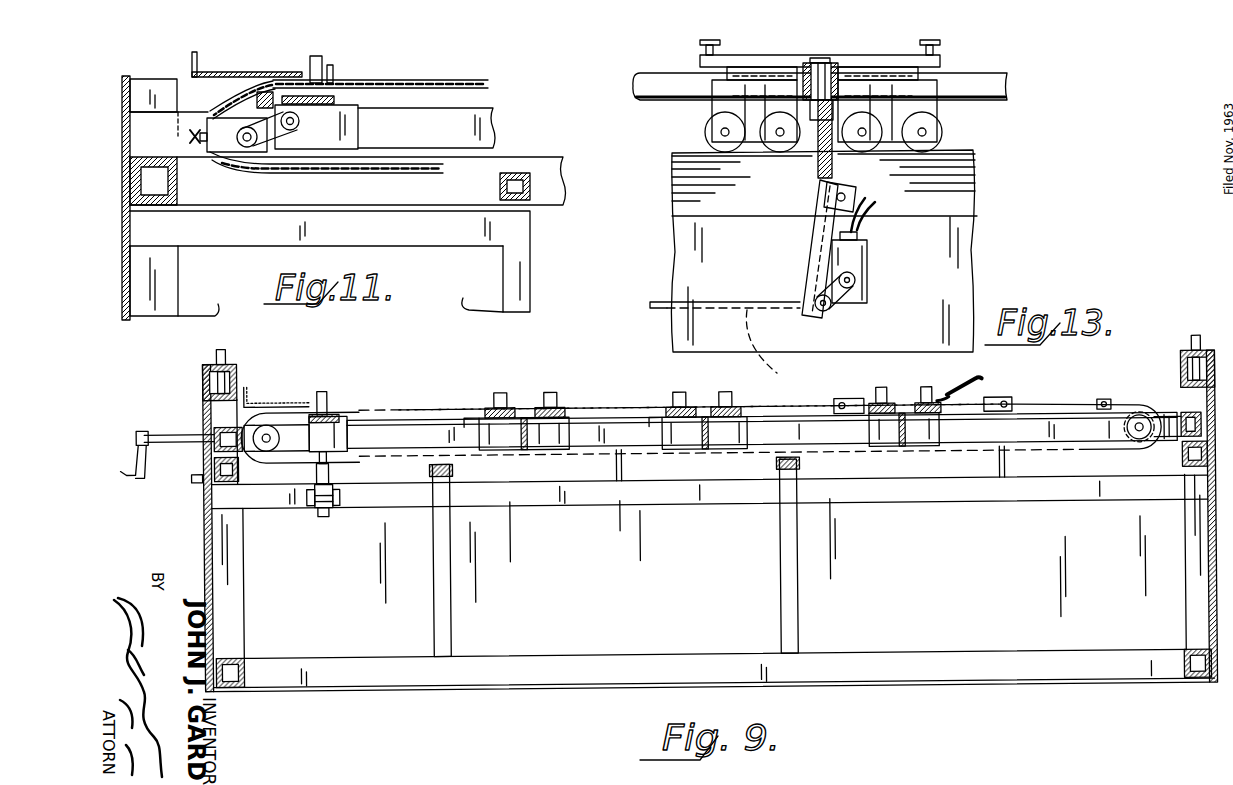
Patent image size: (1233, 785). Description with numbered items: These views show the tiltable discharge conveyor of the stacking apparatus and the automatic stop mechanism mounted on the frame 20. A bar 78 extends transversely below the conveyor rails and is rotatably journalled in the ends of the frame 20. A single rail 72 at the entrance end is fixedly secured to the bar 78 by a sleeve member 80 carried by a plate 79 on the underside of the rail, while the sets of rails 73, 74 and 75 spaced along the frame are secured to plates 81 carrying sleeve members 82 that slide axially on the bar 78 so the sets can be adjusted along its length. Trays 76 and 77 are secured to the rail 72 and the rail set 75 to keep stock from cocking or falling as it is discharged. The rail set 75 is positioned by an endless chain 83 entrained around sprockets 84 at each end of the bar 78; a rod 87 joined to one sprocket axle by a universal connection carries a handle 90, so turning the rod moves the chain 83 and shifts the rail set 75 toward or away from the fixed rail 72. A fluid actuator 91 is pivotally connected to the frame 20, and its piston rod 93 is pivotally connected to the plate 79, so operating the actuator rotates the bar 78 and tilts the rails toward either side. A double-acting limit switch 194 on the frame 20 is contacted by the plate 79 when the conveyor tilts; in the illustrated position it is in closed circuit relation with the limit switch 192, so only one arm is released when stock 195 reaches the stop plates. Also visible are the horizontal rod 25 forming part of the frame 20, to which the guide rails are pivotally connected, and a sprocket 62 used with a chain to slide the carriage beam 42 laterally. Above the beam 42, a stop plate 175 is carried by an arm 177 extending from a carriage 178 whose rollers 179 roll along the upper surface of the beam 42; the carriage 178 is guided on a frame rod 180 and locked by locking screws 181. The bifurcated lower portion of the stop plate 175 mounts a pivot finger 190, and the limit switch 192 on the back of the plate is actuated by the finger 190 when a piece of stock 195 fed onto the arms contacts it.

In FIG. 11, the rectangular frame 20 is at (122, 234).
In FIG. 9, the rectangular frame 20 is at (203, 532).
In FIG. 9, the horizontal rod 25 is at (192, 477).
In FIG. 13, the carriage beam 42 is at (960, 165).
In FIG. 9, the sprocket 62 is at (204, 368).
In FIG. 11, the single rail 72 is at (309, 63).
In FIG. 9, the single rail 72 is at (331, 393).
In FIG. 9, the set of rails 73 is at (546, 404).
In FIG. 9, the set of rails 74 is at (728, 404).
In FIG. 9, the set of rails 75 is at (922, 402).
In FIG. 11, the tray 76 is at (197, 57).
In FIG. 9, the tray 76 is at (260, 403).
In FIG. 9, the tray 77 is at (978, 381).
In FIG. 11, the bar 78 is at (484, 128).
In FIG. 9, the bar 78 is at (600, 417).
In FIG. 11, the plate 79 is at (338, 98).
In FIG. 9, the plate 79 is at (336, 415).
In FIG. 9, the sleeve member 80 is at (354, 435).
In FIG. 9, the plate 81 is at (487, 415).
In FIG. 9, the sleeve member 82 is at (555, 449).
In FIG. 11, the chain 83 is at (489, 78).
In FIG. 9, the chain 83 is at (425, 406).
In FIG. 11, the sprocket 84 is at (236, 101).
In FIG. 9, the sprocket 84 is at (270, 420).
In FIG. 9, the rod 87 is at (186, 428).
In FIG. 9, the handle 90 is at (138, 444).
In FIG. 9, the fluid actuator 91 is at (315, 517).
In FIG. 9, the piston rod 93 is at (331, 458).
In FIG. 13, the stop plate 175 is at (832, 169).
In FIG. 13, the arm 177 is at (845, 45).
In FIG. 13, the carriage 178 is at (793, 58).
In FIG. 13, the rollers 179 is at (705, 132).
In FIG. 13, the frame rod 180 is at (990, 78).
In FIG. 13, the locking screw 181 is at (700, 43).
In FIG. 13, the pivot finger 190 is at (812, 241).
In FIG. 13, the limit switch 192 is at (866, 257).
In FIG. 11, the double-acting limit switch 194 is at (221, 143).
In FIG. 13, the stock 195 is at (728, 343).